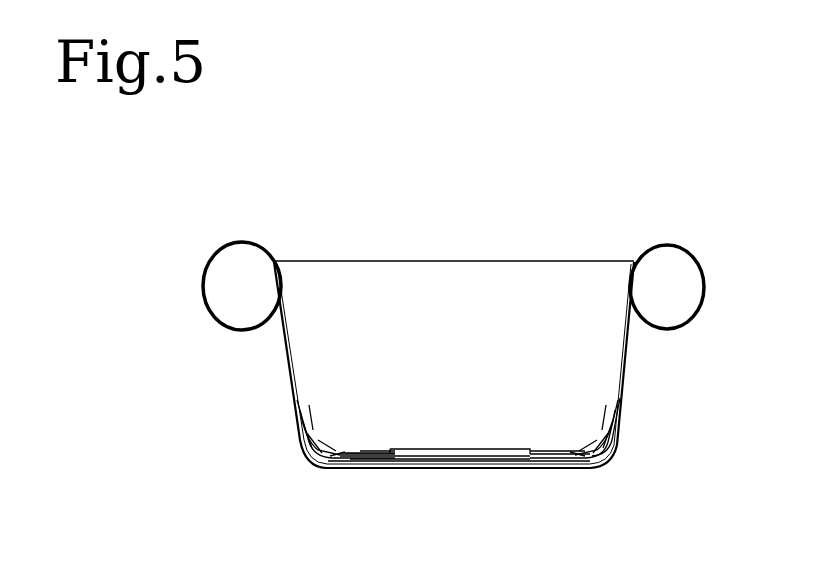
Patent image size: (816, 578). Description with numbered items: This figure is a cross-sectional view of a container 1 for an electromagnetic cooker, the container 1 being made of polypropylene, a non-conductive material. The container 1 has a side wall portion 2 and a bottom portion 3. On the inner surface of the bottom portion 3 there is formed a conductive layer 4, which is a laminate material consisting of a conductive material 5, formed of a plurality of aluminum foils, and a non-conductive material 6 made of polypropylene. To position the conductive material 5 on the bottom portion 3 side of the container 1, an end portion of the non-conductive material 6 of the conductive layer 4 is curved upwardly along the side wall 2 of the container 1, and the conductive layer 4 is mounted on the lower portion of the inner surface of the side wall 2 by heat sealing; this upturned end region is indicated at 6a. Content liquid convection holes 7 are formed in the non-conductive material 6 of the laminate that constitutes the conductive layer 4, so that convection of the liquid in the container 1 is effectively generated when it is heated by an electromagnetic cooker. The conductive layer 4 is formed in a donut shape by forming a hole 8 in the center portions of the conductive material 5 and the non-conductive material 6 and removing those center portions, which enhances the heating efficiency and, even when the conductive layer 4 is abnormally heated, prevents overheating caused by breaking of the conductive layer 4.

The container 1 is at (596, 216).
The side wall portion 2 is at (626, 368).
The bottom portion 3 is at (465, 470).
The conductive layer 4 is at (388, 395).
The conductive material 5 is at (379, 453).
The non-conductive material 6 is at (405, 450).
The upturned edge of conductive layer 6a is at (607, 410).
The content liquid convection holes 7 is at (336, 452).
The hole 8 is at (465, 448).